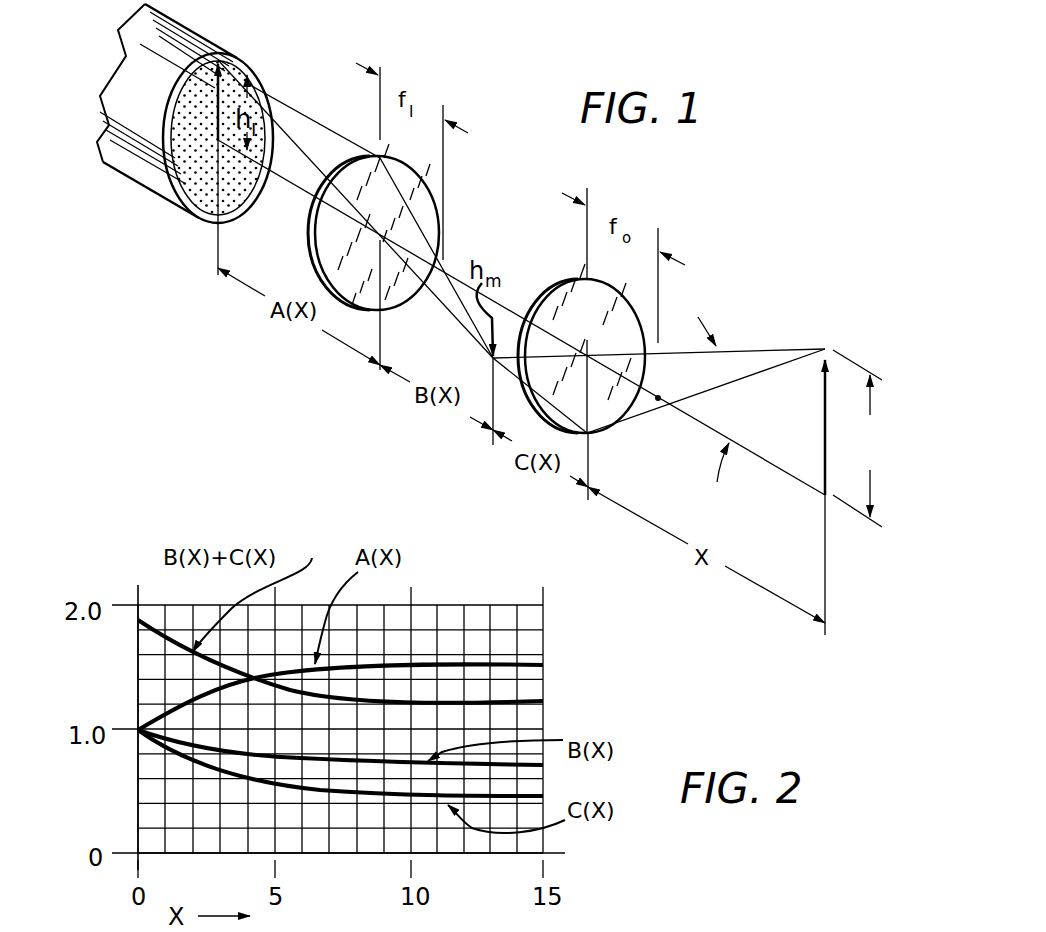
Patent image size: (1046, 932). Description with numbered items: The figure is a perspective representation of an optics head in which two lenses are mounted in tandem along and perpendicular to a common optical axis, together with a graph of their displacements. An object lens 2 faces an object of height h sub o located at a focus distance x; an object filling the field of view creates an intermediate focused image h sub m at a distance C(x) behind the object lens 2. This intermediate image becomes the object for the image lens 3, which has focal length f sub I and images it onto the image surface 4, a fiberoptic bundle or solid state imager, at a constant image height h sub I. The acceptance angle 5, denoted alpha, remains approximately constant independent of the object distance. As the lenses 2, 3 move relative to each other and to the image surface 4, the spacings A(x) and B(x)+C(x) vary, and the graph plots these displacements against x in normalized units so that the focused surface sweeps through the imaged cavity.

The object lens 2 is at (574, 280).
The image lens 3 is at (316, 238).
The image surface 4 is at (240, 68).
The acceptance angle 5 is at (745, 412).